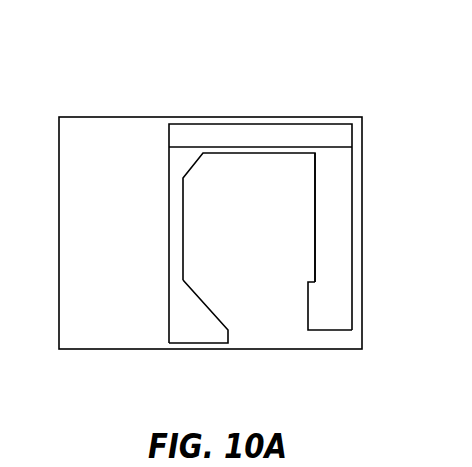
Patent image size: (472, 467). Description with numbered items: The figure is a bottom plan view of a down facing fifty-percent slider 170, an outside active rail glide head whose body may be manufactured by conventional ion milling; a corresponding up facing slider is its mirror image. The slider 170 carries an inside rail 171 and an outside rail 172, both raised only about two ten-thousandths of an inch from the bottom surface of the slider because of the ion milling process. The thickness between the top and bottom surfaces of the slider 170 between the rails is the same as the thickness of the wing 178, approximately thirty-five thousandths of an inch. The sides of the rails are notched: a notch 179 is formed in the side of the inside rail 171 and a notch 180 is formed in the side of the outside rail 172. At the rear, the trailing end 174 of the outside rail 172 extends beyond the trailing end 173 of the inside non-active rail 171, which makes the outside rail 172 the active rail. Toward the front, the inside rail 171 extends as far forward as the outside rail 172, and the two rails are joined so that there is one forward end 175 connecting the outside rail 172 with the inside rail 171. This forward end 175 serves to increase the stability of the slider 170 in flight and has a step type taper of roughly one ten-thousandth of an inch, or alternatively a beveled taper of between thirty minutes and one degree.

The down facing slider 170 is at (85, 88).
The inside rail 171 is at (352, 200).
The outside rail 172 is at (169, 197).
The trailing end of inside rail 173 is at (330, 331).
The trailing end of outside rail 174 is at (200, 345).
The forward end 175 is at (260, 135).
The wing 178 is at (105, 349).
The notch 179 is at (315, 244).
The notch 180 is at (183, 222).